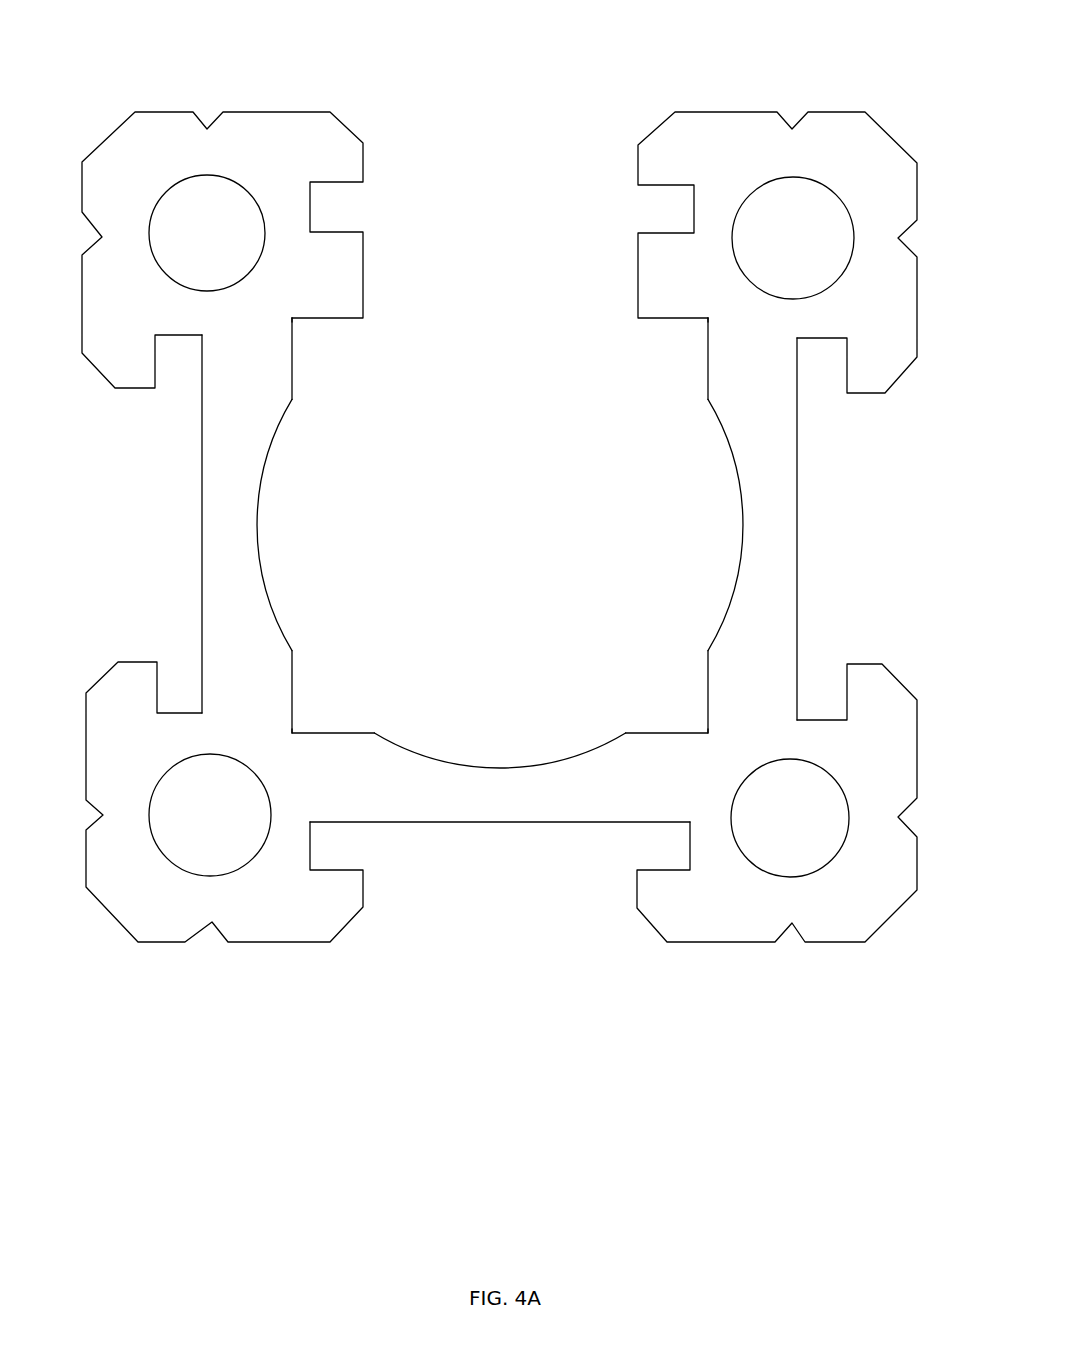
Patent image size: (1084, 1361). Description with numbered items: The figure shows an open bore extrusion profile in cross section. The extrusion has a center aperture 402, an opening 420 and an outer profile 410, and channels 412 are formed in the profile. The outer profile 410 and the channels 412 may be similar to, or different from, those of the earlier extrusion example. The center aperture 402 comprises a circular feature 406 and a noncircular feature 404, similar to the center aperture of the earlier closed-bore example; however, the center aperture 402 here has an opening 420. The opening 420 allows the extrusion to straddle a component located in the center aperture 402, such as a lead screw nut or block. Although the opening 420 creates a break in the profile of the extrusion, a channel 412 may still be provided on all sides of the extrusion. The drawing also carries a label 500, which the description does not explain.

The center aperture 402 is at (500, 543).
The noncircular feature 404 is at (292, 320).
The circular feature 406 is at (257, 505).
The outer profile 410 is at (175, 97).
The channel 412 is at (372, 203).
The opening 420 is at (499, 511).
The cross-section 500 is at (499, 588).